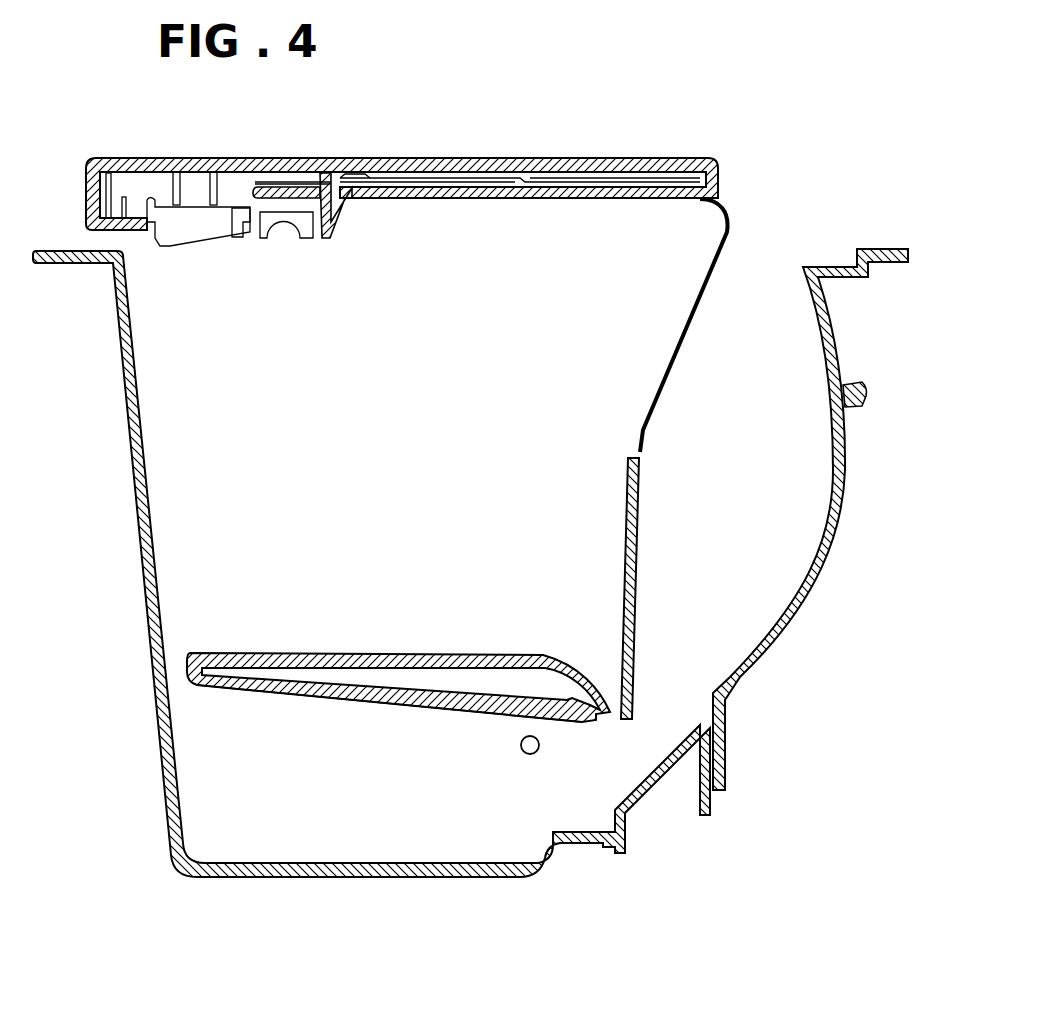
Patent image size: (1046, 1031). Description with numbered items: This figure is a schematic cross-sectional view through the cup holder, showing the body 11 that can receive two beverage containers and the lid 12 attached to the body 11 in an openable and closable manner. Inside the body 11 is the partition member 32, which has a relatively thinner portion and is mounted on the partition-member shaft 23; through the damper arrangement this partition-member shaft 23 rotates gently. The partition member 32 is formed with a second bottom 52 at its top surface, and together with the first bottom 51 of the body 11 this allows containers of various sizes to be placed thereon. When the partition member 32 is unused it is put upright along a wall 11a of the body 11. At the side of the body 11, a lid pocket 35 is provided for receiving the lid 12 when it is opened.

The body 11 is at (156, 733).
The wall 11a is at (622, 562).
The lid 12 is at (428, 158).
The partition-member shaft 23 is at (537, 753).
The partition member 32 is at (298, 700).
The lid pocket 35 is at (765, 600).
The first bottom 51 is at (357, 864).
The second bottom 52 is at (400, 651).